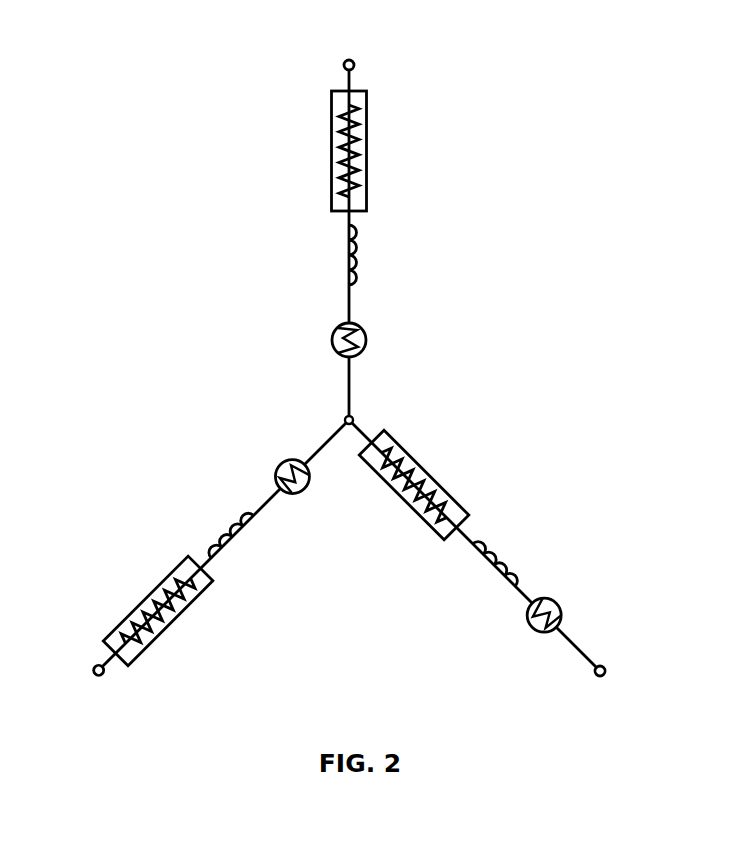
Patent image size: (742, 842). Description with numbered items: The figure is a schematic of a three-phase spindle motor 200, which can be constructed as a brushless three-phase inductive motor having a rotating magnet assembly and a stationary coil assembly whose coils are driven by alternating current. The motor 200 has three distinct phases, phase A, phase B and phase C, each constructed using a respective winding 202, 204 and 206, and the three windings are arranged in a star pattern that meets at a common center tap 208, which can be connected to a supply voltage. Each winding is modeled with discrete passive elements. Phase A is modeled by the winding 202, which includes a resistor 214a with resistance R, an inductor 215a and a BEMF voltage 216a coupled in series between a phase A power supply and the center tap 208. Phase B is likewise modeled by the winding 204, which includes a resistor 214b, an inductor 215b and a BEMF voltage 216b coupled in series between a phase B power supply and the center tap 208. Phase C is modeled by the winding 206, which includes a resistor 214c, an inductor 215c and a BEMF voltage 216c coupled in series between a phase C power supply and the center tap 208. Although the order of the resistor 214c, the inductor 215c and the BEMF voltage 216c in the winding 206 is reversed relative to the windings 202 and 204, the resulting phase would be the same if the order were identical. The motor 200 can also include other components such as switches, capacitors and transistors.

The three-phase spindle motor 200 is at (638, 67).
The winding 202 is at (423, 153).
The winding 204 is at (98, 485).
The winding 206 is at (533, 478).
The center tap 208 is at (343, 418).
The resistor 214a is at (335, 148).
The resistor 214b is at (147, 592).
The resistor 214c is at (430, 463).
The inductor 215a is at (345, 263).
The inductor 215b is at (239, 537).
The inductor 215c is at (482, 558).
The BEMF voltage 216a is at (368, 338).
The BEMF voltage 216b is at (277, 470).
The BEMF voltage 216c is at (562, 595).